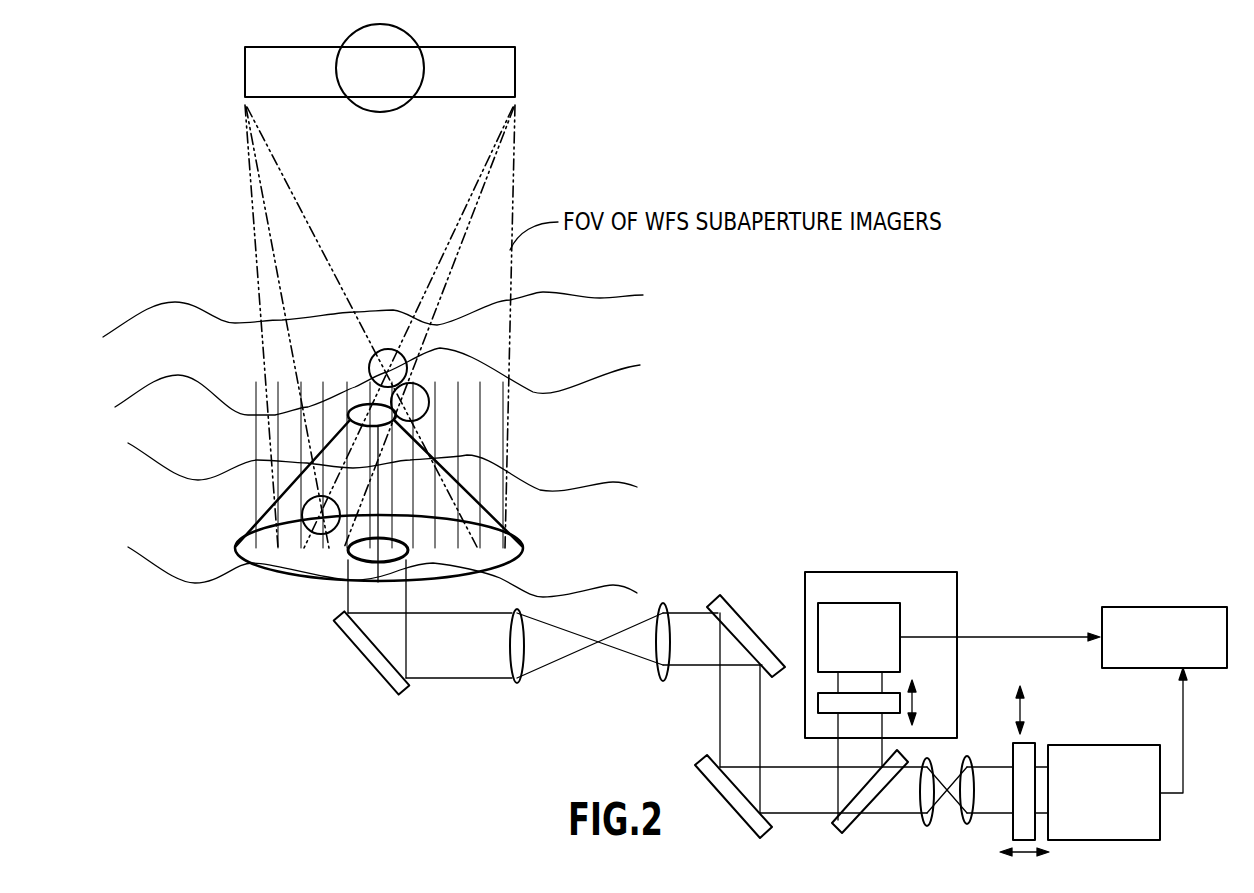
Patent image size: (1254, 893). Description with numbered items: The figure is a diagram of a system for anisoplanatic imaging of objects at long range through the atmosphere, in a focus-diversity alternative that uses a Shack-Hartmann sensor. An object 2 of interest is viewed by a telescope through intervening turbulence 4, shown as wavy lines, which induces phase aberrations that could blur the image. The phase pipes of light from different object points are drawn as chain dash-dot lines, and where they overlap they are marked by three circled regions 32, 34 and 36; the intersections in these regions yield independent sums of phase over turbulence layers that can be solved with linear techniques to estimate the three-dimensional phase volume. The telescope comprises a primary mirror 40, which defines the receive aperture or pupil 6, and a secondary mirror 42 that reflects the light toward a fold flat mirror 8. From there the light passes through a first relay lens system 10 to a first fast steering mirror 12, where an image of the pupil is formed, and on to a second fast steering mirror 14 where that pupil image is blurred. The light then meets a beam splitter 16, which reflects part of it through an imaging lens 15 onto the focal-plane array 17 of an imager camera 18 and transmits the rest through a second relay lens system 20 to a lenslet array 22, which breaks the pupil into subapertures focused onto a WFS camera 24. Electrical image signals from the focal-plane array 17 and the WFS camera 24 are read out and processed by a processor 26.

The object 2 is at (393, 107).
The turbulence 4 is at (677, 342).
The pupil 6 is at (433, 555).
The fold flat mirror 8 is at (363, 656).
The first relay lens system 10 is at (661, 685).
The first fast steering mirror 12 is at (720, 595).
The second fast steering mirror 14 is at (733, 815).
The imaging lens 15 is at (818, 701).
The beam splitter 16 is at (852, 828).
The focal-plane array 17 is at (900, 618).
The imager camera 18 is at (960, 582).
The second relay lens system 20 is at (967, 823).
The lenslet array 22 is at (1025, 745).
The WFS camera 24 is at (1133, 745).
The processor 26 is at (1167, 607).
The region 32 is at (370, 360).
The region 34 is at (398, 410).
The region 36 is at (319, 540).
The primary mirror 40 is at (522, 555).
The secondary mirror 42 is at (347, 412).